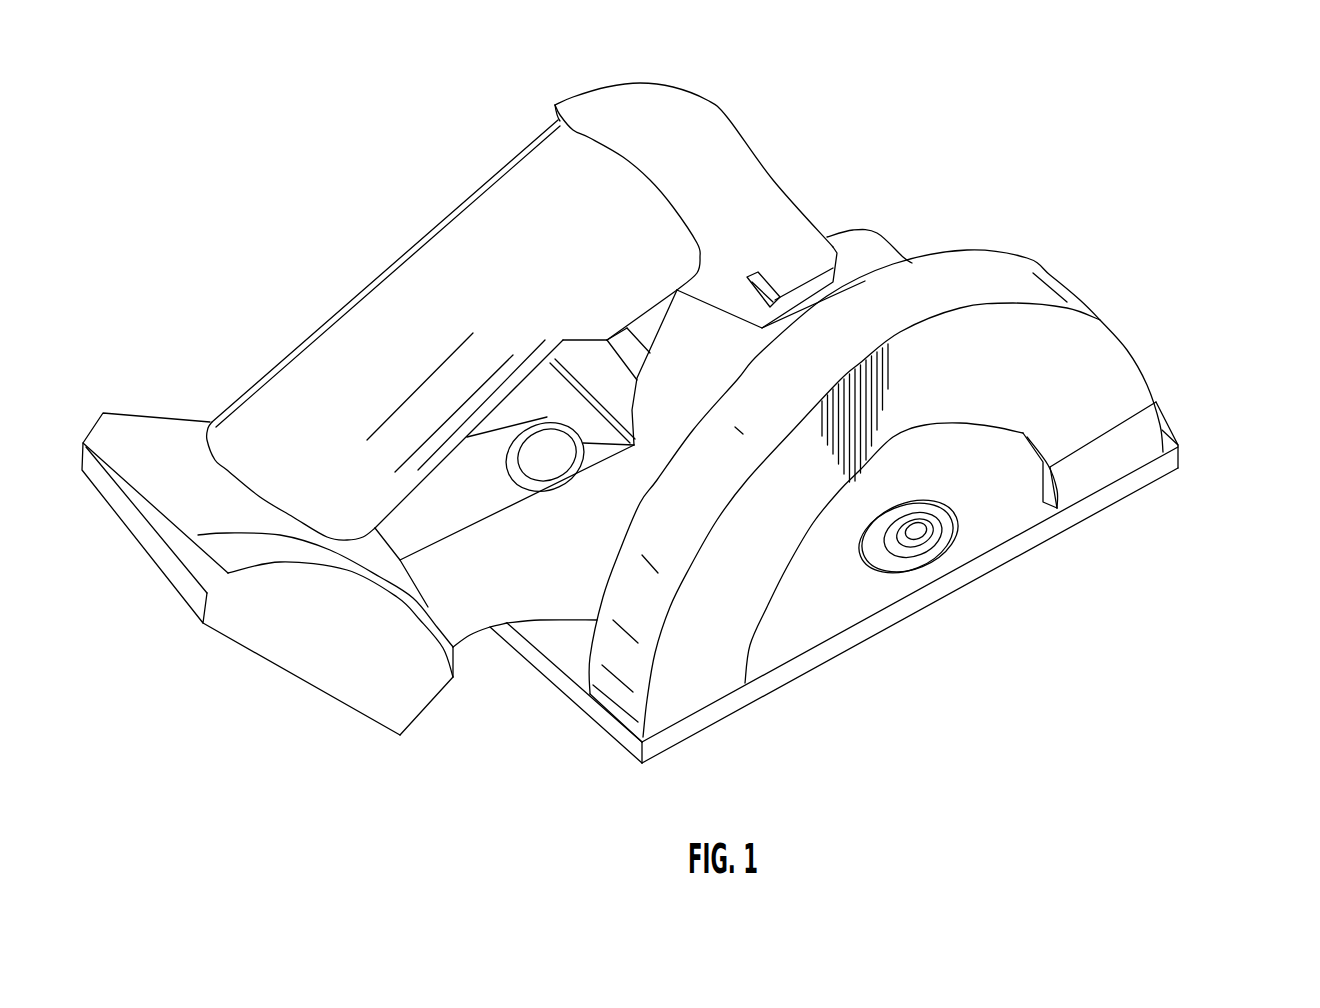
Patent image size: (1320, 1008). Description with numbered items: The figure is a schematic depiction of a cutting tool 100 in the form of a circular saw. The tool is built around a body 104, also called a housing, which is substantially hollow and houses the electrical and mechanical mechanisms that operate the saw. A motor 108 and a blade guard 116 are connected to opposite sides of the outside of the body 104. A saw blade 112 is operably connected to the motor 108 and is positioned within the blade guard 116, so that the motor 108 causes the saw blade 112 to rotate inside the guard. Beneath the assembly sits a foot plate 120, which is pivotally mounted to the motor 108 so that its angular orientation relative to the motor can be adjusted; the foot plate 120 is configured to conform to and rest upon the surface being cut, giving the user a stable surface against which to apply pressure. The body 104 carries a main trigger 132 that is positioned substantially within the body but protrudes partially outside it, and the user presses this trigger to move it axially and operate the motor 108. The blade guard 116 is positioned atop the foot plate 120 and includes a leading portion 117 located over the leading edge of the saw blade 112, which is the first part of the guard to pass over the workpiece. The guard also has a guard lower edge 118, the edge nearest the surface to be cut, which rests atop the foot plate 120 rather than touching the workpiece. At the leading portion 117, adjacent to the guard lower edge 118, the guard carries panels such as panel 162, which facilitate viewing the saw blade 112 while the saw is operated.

The cutting tool 100 is at (227, 197).
The body 104 is at (765, 217).
The motor 108 is at (593, 367).
The saw blade 112 is at (1017, 517).
The blade guard 116 is at (1098, 365).
The leading portion 117 is at (1125, 393).
The guard lower edge 118 is at (1107, 487).
The foot plate 120 is at (1180, 443).
The main trigger 132 is at (825, 237).
The panel 162 is at (1137, 433).